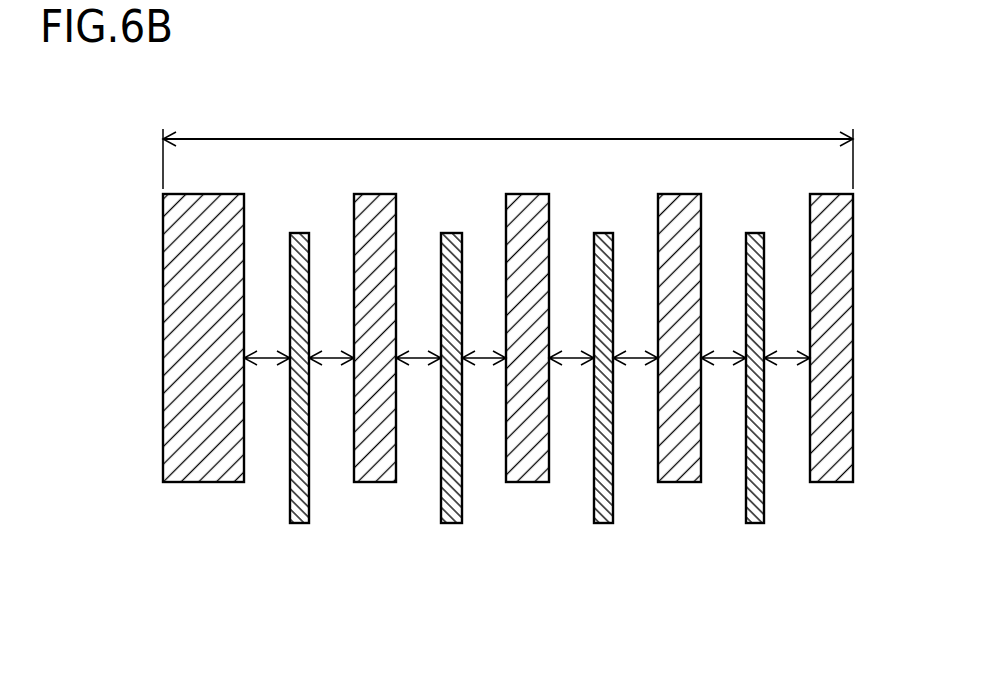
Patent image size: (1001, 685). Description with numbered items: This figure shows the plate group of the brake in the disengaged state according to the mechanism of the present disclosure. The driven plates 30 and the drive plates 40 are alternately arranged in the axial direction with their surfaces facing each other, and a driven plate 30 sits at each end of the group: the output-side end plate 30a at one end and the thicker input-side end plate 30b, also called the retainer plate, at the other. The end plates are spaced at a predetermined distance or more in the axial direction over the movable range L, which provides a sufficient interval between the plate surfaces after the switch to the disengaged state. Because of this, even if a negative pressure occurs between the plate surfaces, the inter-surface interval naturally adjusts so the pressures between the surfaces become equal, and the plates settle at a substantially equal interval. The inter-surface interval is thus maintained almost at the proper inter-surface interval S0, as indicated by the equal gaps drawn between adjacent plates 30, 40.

The driven plates 30 is at (527, 338).
The output-side end plate 30a is at (833, 470).
The input-side end plate 30b is at (205, 468).
The drive plates 40 is at (450, 507).
The proper inter-surface interval S0 is at (785, 358).
The movable range L is at (508, 137).